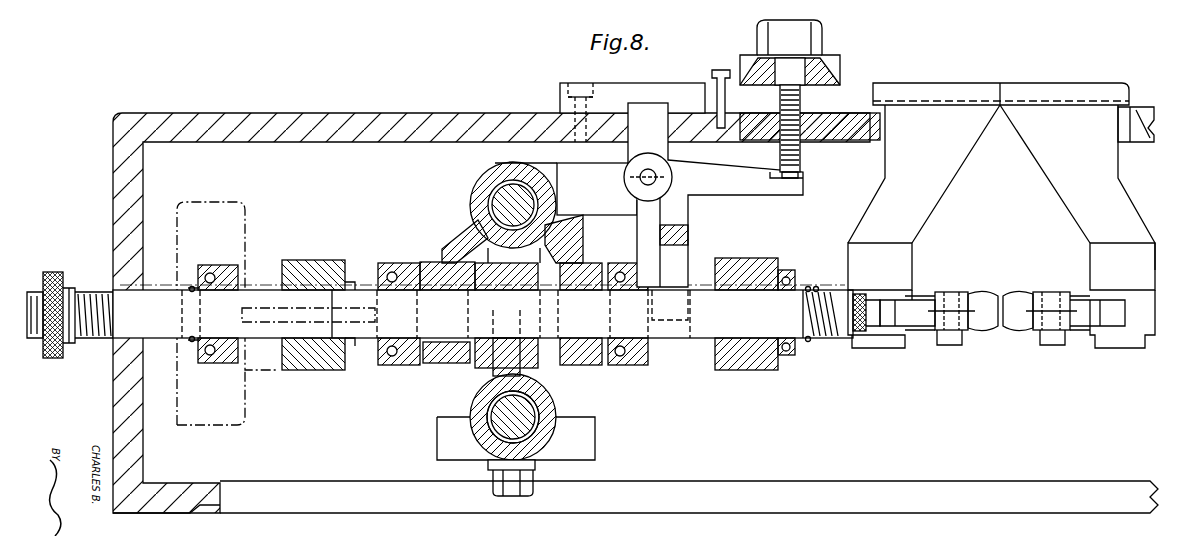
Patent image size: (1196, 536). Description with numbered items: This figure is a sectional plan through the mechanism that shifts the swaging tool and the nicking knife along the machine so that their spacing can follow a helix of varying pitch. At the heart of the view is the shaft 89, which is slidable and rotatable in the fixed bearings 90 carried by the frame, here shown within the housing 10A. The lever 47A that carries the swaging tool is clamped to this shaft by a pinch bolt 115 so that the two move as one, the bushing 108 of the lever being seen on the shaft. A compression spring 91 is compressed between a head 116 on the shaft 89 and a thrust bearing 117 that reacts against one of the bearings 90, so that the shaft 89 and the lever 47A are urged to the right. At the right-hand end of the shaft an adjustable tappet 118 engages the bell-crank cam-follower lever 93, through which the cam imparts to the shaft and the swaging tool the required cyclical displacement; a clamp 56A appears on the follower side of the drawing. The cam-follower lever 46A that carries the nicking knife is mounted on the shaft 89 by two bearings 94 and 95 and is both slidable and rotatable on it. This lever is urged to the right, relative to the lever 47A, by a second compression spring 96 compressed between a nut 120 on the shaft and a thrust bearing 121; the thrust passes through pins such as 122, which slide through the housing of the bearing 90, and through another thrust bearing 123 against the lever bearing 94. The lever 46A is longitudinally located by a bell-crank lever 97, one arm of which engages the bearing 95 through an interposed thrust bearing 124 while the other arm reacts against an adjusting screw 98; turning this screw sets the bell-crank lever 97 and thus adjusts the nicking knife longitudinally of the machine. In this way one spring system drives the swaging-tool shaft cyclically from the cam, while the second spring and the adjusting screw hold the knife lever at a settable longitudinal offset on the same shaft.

The housing 10A is at (400, 123).
The cam-follower lever 46A is at (478, 218).
The lever 47A is at (480, 403).
The clamp 56A is at (1057, 292).
The shaft 89 is at (165, 352).
The bearings 90 is at (348, 350).
The compression spring 91 is at (812, 352).
The bell-crank cam-follower lever 93 is at (950, 292).
The bearing 94 is at (440, 362).
The bearing 95 is at (590, 362).
The compression spring 96 is at (187, 290).
The bell-crank lever 97 is at (690, 218).
The adjusting screw 98 is at (800, 158).
The bushing 108 is at (528, 410).
The pinch bolt 115 is at (535, 490).
The head 116 is at (843, 345).
The thrust bearing 117 is at (785, 268).
The adjustable tappet 118 is at (872, 300).
The nut 120 is at (66, 350).
The thrust bearing 121 is at (226, 272).
The pins 122 is at (262, 318).
The thrust bearing 123 is at (400, 265).
The thrust bearing 124 is at (640, 360).